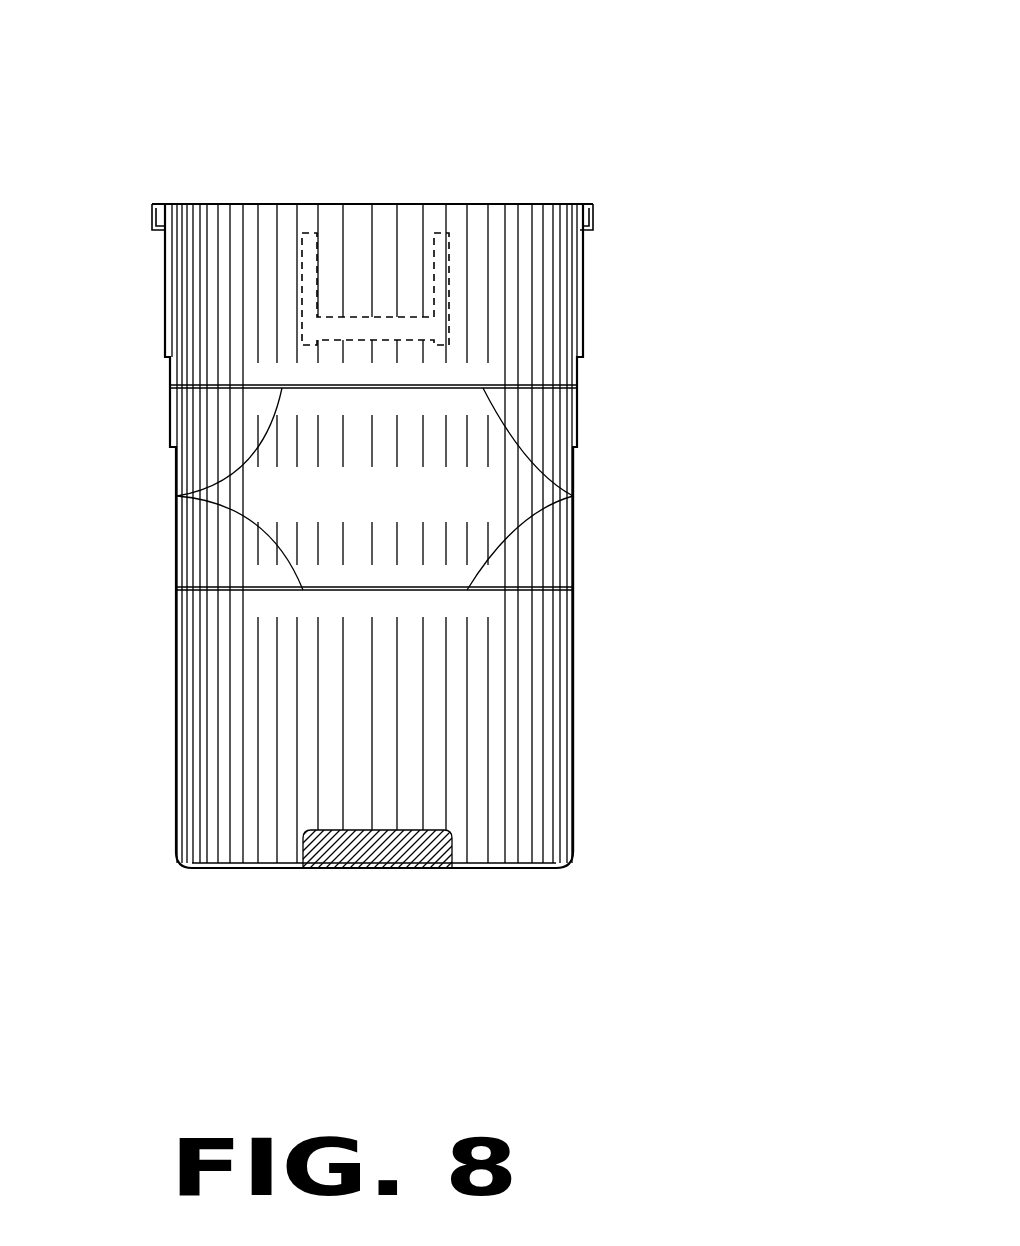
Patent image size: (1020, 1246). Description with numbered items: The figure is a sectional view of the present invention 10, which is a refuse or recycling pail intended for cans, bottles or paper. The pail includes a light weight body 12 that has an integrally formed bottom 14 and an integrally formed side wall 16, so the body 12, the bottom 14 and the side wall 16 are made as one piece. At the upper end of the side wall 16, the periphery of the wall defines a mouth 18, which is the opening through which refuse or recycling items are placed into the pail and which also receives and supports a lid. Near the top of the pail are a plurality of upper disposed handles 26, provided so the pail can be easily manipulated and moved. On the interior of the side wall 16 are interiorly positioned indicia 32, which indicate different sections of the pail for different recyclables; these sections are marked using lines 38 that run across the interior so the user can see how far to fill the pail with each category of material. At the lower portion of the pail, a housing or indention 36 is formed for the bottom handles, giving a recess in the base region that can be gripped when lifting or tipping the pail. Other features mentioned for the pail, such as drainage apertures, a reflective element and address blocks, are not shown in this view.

The present invention 10 is at (712, 188).
The light weight body 12 is at (573, 727).
The bottom 14 is at (510, 868).
The side wall 16 is at (573, 773).
The mouth 18 is at (560, 207).
The upper disposed handles 26 is at (365, 323).
The interiorly positioned indicia 32 is at (177, 497).
The housing or indention for the bottom handles 36 is at (322, 865).
The lines 38 is at (573, 498).